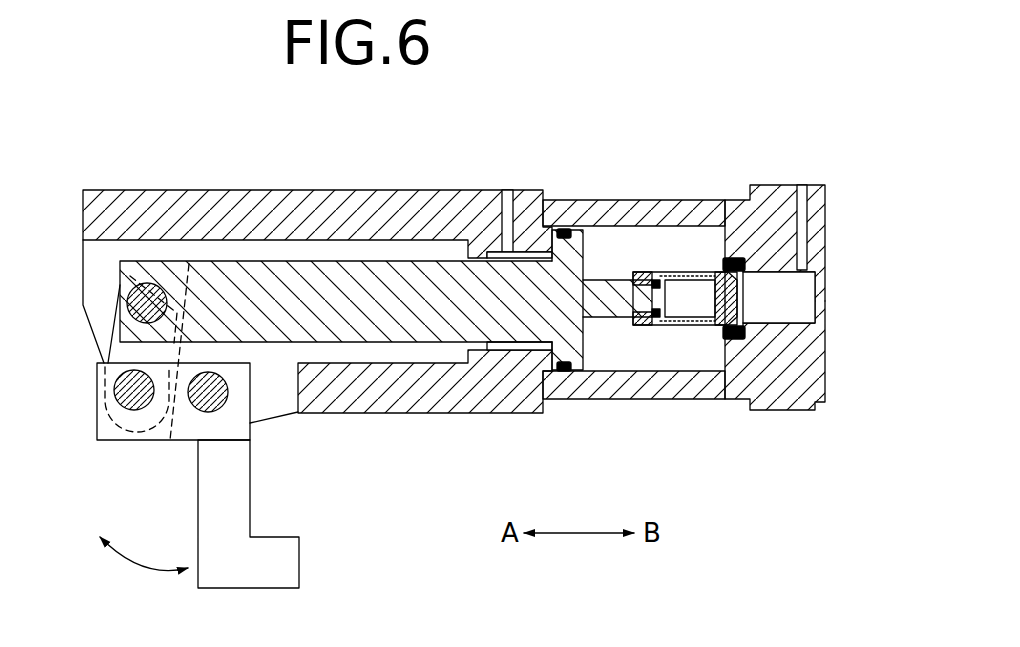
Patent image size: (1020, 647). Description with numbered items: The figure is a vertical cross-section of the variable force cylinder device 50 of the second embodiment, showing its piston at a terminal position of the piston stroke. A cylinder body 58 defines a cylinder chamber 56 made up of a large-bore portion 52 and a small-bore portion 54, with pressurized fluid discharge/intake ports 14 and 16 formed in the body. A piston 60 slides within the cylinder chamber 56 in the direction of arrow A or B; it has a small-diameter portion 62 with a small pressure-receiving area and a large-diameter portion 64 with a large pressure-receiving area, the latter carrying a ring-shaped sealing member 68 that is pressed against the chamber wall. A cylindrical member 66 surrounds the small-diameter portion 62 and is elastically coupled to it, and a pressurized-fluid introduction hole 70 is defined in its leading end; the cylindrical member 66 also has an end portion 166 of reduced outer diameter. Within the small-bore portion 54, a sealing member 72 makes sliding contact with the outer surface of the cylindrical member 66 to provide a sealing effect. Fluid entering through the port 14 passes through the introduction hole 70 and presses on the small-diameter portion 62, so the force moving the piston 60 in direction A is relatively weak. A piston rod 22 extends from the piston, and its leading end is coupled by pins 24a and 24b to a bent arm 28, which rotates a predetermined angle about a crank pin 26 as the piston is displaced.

The pressurized fluid discharge/intake port 14 is at (801, 190).
The pressurized fluid discharge/intake port 16 is at (506, 196).
The piston rod 22 is at (392, 330).
The pin 24a is at (148, 284).
The pin 24b is at (134, 408).
The crank pin 26 is at (208, 412).
The bent arm 28 is at (236, 495).
The variable force cylinder device 50 is at (701, 127).
The large-bore portion 52 is at (645, 222).
The small-bore portion 54 is at (785, 322).
The cylinder chamber 56 is at (606, 236).
The cylinder body 58 is at (369, 189).
The piston 60 is at (597, 322).
The small-diameter portion 62 is at (618, 309).
The large-diameter portion 64 is at (577, 373).
The cylindrical member 66 is at (684, 328).
The ring-shaped sealing member 68 is at (562, 228).
The pressurized-fluid introduction hole 70 is at (738, 296).
The sealing member 72 is at (732, 258).
The end portion 166 is at (710, 338).